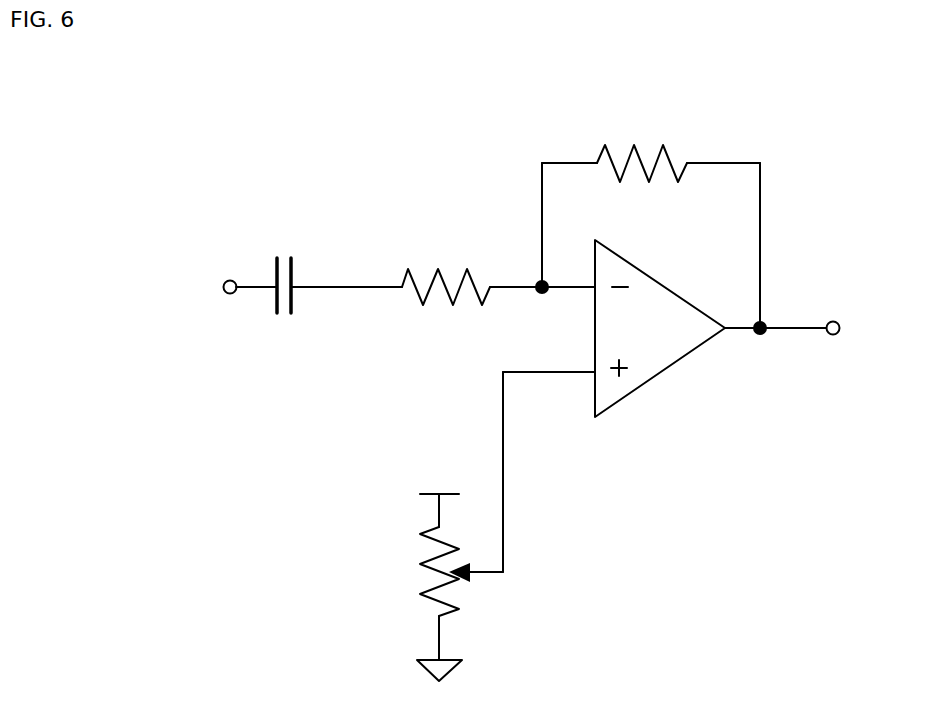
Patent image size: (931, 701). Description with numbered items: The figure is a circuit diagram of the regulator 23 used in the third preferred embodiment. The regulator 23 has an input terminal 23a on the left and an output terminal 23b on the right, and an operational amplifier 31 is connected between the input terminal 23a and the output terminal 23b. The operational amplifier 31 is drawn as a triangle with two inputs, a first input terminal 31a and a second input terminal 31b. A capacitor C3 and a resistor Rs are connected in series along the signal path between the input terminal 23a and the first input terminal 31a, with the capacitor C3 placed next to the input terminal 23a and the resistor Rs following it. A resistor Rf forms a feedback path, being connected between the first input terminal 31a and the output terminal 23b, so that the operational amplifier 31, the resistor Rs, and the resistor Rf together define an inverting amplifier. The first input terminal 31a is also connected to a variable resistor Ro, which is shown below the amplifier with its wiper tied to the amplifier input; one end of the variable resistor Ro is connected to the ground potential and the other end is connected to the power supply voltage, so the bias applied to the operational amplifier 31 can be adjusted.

The regulator 23 is at (488, 133).
The input terminal 23a is at (229, 280).
The output terminal 23b is at (833, 320).
The operational amplifier 31 is at (672, 368).
The first input terminal 31a is at (592, 377).
The second input terminal 31b is at (592, 291).
The capacitor C3 is at (293, 266).
The resistor Rs is at (446, 301).
The resistor Rf is at (642, 146).
The variable resistor Ro is at (424, 587).